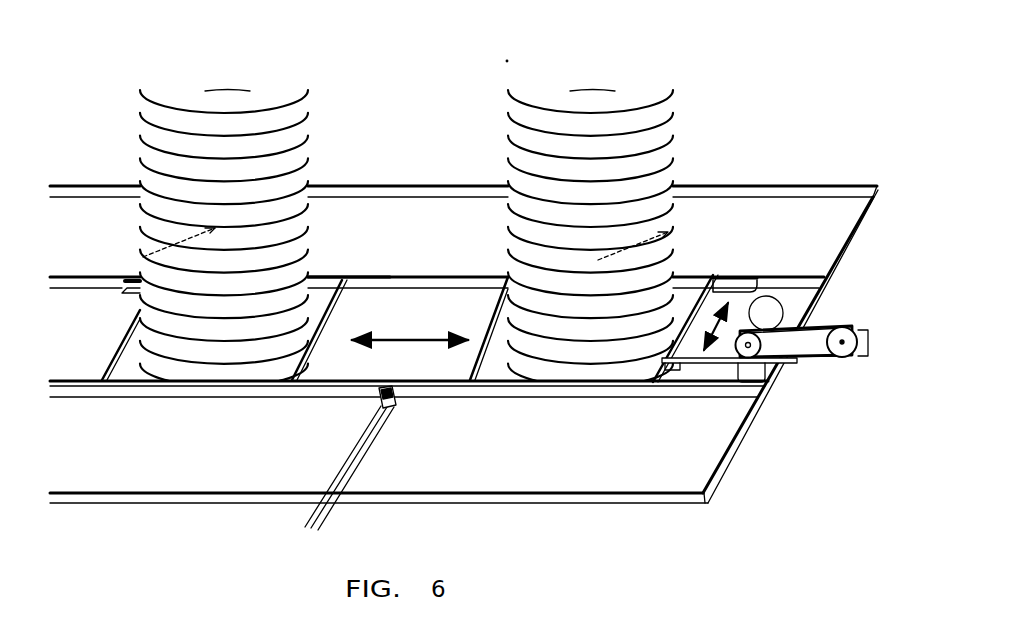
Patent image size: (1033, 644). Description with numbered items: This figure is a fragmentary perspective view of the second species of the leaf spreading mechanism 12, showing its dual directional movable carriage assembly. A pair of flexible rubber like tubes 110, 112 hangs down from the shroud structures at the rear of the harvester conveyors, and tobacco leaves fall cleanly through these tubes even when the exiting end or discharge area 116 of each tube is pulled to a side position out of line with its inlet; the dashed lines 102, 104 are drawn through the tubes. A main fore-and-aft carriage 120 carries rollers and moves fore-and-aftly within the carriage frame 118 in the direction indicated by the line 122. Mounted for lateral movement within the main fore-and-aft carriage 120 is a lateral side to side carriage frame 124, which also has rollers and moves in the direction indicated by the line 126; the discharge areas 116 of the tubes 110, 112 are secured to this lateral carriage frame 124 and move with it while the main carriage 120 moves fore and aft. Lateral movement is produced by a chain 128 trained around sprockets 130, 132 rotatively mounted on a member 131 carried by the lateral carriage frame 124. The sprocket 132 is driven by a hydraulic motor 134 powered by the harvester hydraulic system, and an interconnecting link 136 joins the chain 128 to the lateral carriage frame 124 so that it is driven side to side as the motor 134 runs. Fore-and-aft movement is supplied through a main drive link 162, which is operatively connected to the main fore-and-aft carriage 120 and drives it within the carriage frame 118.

The leaf spreading mechanism 12 is at (730, 80).
The first coil axis 102 is at (140, 255).
The second coil axis 104 is at (668, 232).
The flexible rubber like tube 110 is at (657, 133).
The flexible rubber like tube 112 is at (292, 130).
The exiting end or discharge area 116 is at (140, 367).
The carriage frame 118 is at (390, 193).
The main fore-and-aft carriage 120 is at (804, 252).
The line indicating fore-and-aft direction 122 is at (725, 293).
The lateral side to side carriage frame 124 is at (377, 287).
The line indicating lateral direction 126 is at (390, 337).
The chain 128 is at (810, 360).
The sprocket 130 is at (845, 347).
The member 131 is at (868, 352).
The sprocket 132 is at (797, 327).
The hydraulic motor 134 is at (780, 306).
The interconnecting link 136 is at (723, 362).
The main drive link 162 is at (378, 420).